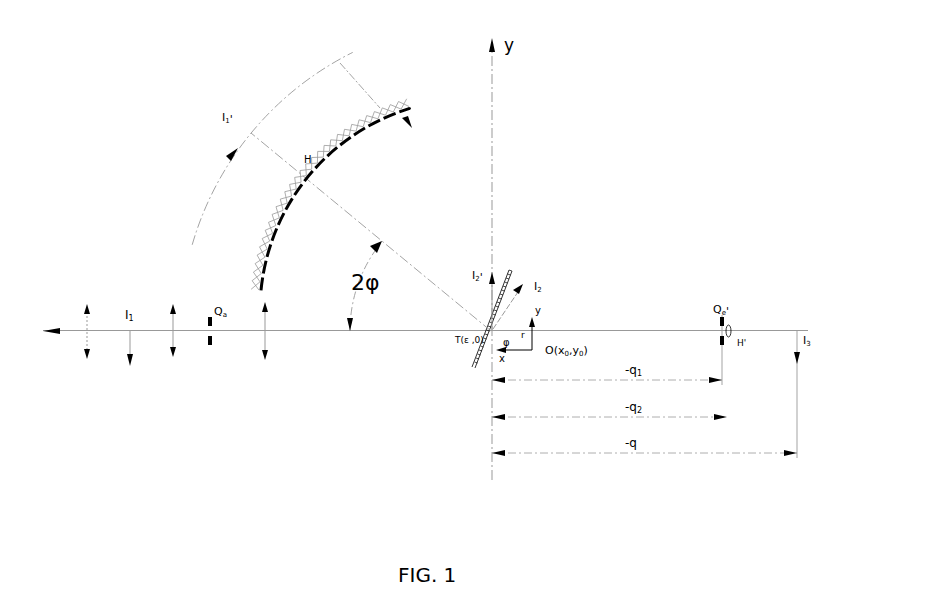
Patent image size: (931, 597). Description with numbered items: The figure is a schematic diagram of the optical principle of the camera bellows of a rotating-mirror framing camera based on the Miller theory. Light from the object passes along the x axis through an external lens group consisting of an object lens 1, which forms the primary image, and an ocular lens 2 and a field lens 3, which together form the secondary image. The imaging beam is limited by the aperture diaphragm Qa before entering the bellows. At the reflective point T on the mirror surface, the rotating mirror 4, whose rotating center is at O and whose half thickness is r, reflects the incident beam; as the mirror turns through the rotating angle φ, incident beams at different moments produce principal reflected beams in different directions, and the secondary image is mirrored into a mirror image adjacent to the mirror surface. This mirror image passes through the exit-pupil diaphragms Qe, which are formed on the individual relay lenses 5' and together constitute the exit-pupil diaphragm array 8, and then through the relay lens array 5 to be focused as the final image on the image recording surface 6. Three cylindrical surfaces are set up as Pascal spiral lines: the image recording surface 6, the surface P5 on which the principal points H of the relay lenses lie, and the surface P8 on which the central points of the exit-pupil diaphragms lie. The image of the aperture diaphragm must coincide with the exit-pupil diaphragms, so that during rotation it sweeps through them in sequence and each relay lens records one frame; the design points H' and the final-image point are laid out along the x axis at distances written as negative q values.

The object lens 1 is at (85, 350).
The ocular lens 2 is at (170, 348).
The field lens 3 is at (262, 345).
The rotating mirror 4 is at (510, 280).
The relay lens array 5 is at (330, 168).
The relay lens 5' is at (330, 66).
The image recording surface 6 is at (270, 112).
The exit-pupil diaphragm array 8 is at (423, 143).
The cylindrical surface where principal points of the relay lenses are located P5 is at (408, 106).
The cylindrical surface where central points of the exit-pupil diaphragms are locate P8 is at (412, 110).